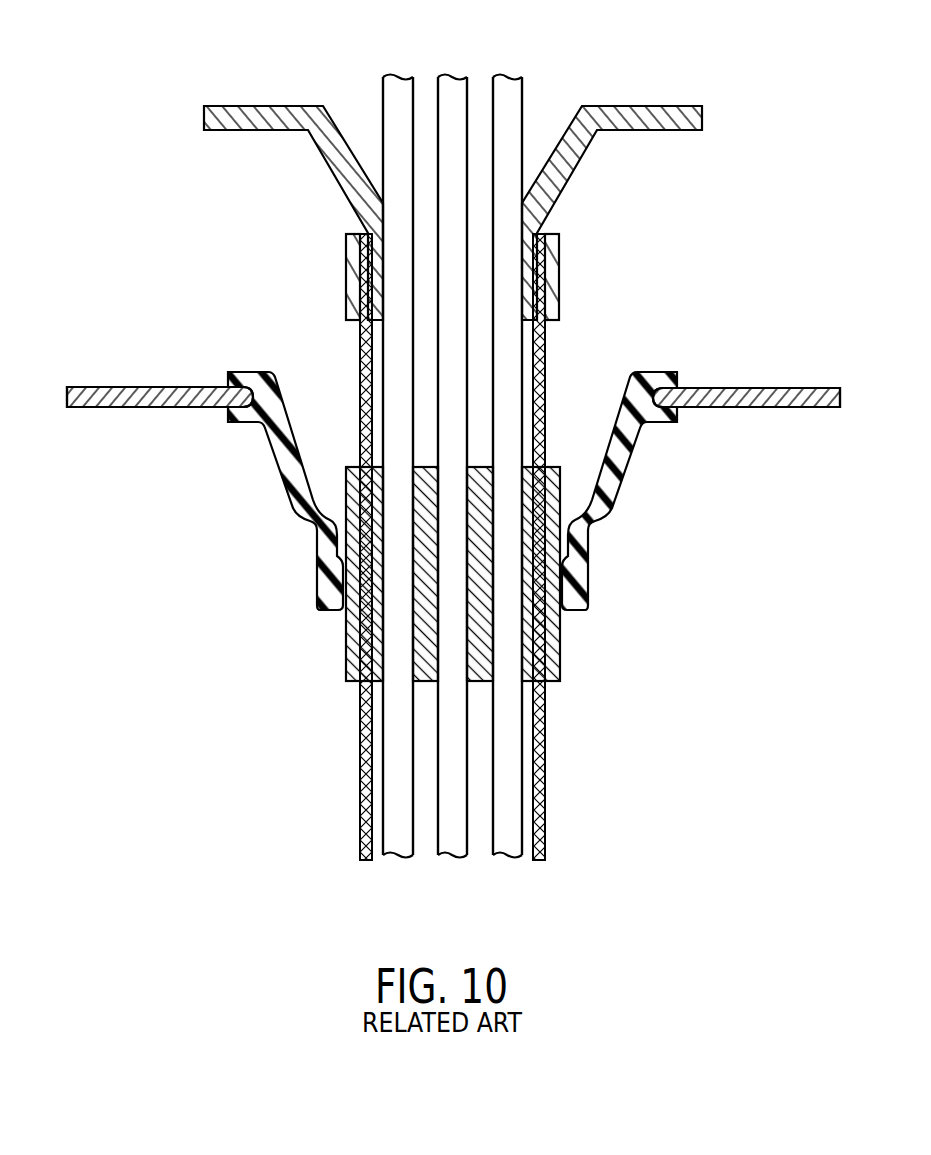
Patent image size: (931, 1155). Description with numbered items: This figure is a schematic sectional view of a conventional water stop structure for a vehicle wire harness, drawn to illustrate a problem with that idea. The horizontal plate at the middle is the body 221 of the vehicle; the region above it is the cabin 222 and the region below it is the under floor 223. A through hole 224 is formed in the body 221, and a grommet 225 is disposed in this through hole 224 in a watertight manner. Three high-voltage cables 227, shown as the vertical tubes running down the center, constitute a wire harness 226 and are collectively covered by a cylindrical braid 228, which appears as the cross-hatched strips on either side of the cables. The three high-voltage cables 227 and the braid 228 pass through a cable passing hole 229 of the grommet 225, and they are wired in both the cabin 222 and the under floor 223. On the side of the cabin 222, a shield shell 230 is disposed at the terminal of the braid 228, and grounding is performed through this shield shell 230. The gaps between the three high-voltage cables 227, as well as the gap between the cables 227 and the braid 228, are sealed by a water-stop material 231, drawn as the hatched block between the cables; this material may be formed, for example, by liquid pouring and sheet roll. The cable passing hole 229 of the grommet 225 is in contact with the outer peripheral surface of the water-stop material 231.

The body 221 is at (103, 385).
The cabin 222 is at (123, 123).
The under floor 223 is at (180, 587).
The through hole 224 is at (267, 372).
The grommet 225 is at (258, 462).
The wire harness 226 is at (358, 785).
The high-voltage cables 227 is at (398, 857).
The braid 228 is at (543, 758).
The cable passing hole 229 is at (582, 582).
The shield shell 230 is at (563, 160).
The water-stop material 231 is at (345, 653).